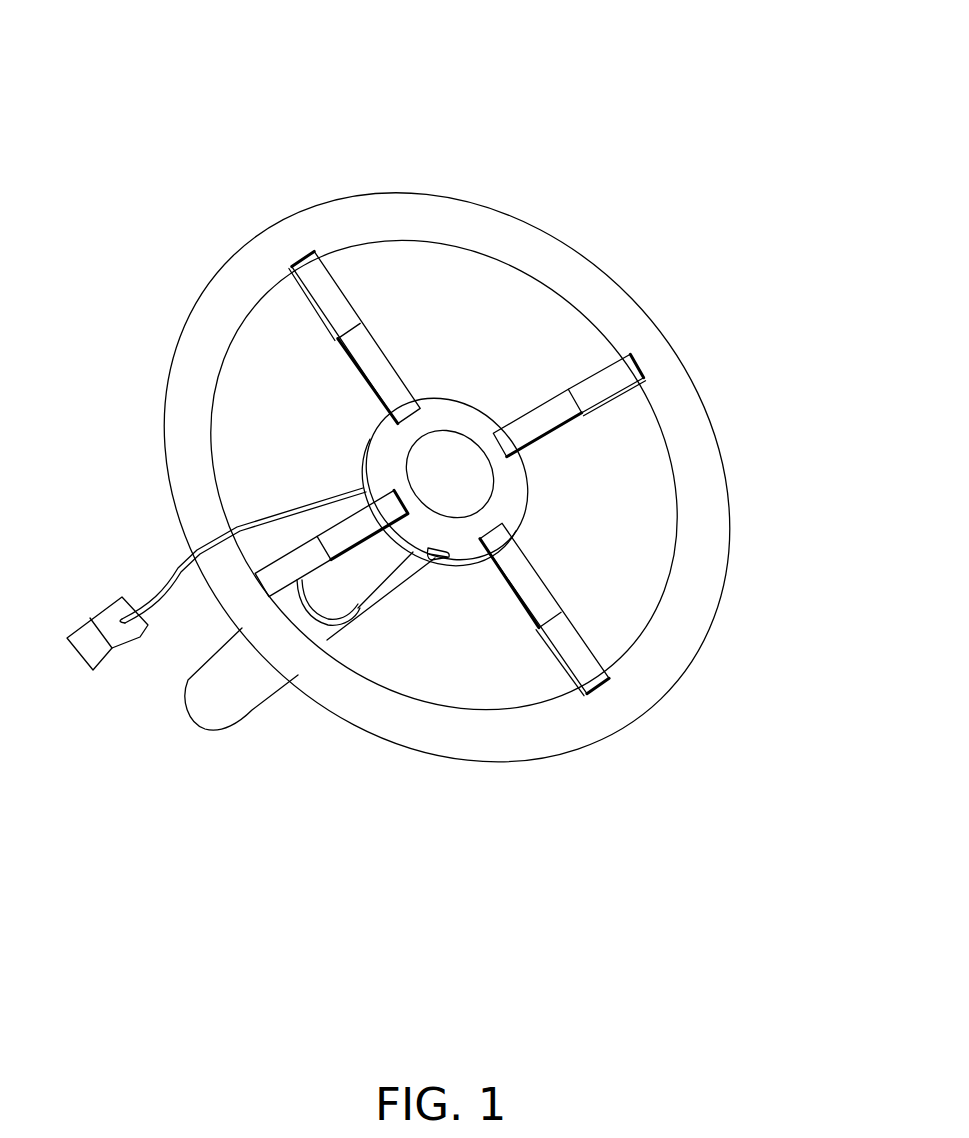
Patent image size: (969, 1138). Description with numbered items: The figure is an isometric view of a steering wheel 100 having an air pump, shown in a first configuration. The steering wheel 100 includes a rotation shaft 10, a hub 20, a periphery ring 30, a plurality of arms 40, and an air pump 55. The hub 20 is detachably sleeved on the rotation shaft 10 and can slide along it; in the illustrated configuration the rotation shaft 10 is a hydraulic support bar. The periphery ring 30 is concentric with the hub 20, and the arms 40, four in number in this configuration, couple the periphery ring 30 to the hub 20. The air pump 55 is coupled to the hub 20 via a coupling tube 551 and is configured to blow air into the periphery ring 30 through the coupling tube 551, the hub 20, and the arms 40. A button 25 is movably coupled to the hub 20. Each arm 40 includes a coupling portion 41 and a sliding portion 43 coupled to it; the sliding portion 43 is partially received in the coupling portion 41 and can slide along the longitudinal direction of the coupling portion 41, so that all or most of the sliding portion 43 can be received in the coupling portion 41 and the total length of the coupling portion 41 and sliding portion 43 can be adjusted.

The steering wheel 100 is at (423, 49).
The rotation shaft 10 is at (248, 698).
The hub 20 is at (465, 418).
The button 25 is at (437, 563).
The periphery ring 30 is at (205, 306).
The arms 40 is at (544, 473).
The coupling portion 41 is at (552, 423).
The sliding portion 43 is at (602, 390).
The air pump 55 is at (85, 648).
The coupling tube 551 is at (175, 573).